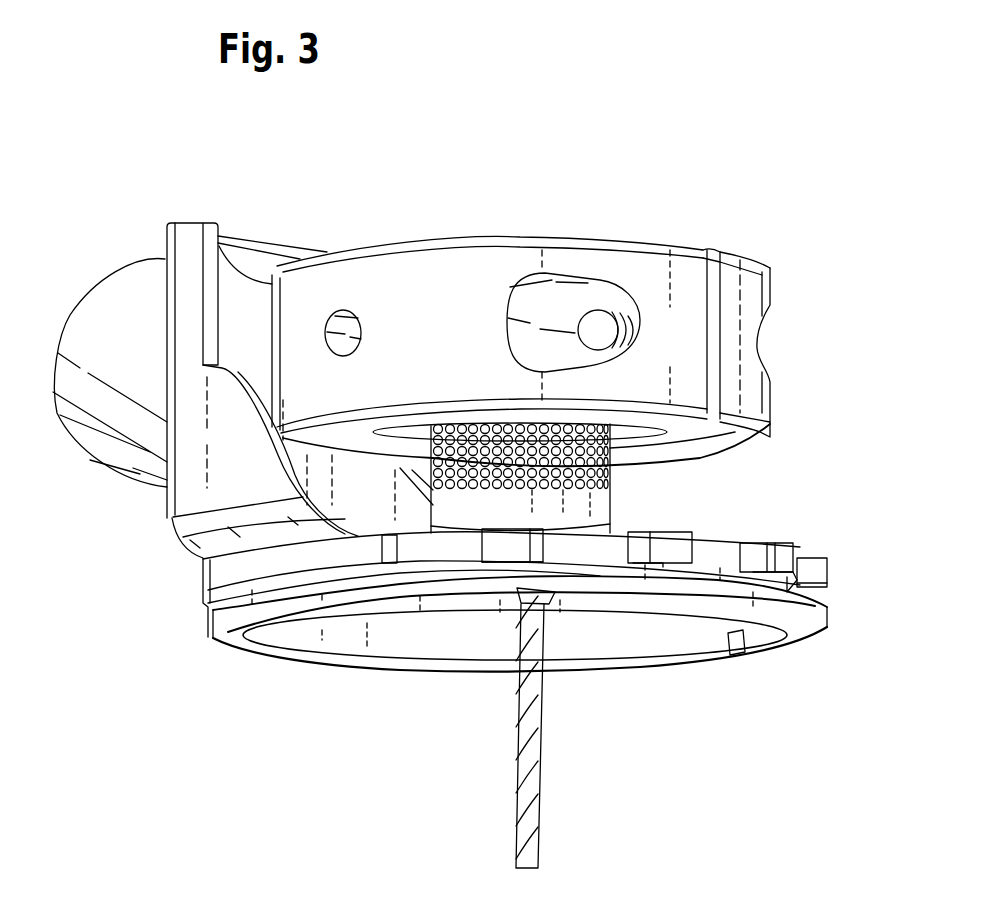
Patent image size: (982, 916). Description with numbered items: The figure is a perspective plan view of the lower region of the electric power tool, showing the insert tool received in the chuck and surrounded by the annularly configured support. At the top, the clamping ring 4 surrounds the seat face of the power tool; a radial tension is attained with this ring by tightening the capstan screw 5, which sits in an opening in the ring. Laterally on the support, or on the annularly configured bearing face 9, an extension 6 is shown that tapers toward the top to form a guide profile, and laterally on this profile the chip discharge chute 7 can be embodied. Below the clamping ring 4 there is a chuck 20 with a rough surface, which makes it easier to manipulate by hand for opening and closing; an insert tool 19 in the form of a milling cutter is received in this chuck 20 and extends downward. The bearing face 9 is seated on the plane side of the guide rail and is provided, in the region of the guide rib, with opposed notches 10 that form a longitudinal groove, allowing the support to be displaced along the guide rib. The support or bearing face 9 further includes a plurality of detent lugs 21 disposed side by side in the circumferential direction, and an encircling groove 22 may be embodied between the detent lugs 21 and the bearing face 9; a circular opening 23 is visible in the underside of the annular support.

The clamping ring 4 is at (753, 393).
The capstan screw 5 is at (592, 323).
The extension 6 is at (197, 487).
The chip discharge chute 7 is at (122, 308).
The bearing face 9 is at (270, 667).
The notches 10 is at (540, 604).
The insert tool 19 is at (538, 843).
The chuck 20 is at (577, 499).
The detent lugs 21 is at (500, 548).
The encircling groove 22 is at (500, 565).
The circular opening 23 is at (683, 630).